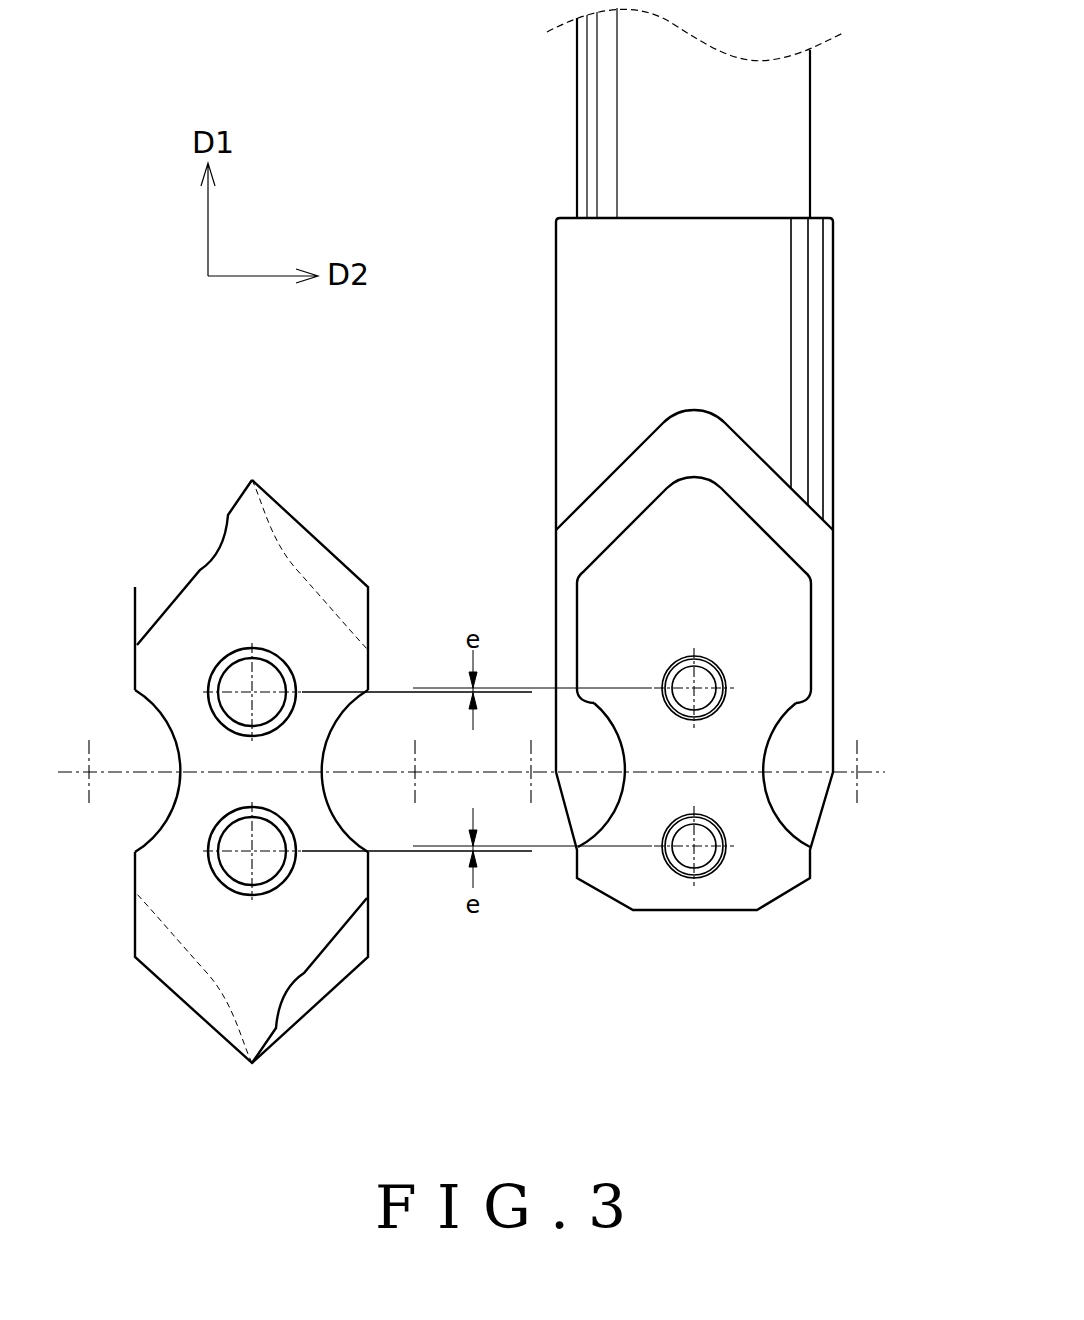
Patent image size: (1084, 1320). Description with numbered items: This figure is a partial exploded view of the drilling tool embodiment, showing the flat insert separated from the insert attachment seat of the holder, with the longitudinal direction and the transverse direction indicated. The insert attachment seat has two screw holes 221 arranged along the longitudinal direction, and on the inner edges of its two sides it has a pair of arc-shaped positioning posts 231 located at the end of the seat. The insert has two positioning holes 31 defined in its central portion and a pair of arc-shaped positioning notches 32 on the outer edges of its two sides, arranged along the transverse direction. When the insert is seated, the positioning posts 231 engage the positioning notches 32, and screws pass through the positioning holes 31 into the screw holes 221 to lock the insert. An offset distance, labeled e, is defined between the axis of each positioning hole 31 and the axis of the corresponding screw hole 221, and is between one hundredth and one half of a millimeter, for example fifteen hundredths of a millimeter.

The positioning hole 31 is at (240, 680).
The positioning notch 32 is at (322, 762).
The screw hole 221 is at (725, 677).
The positioning post 231 is at (595, 757).